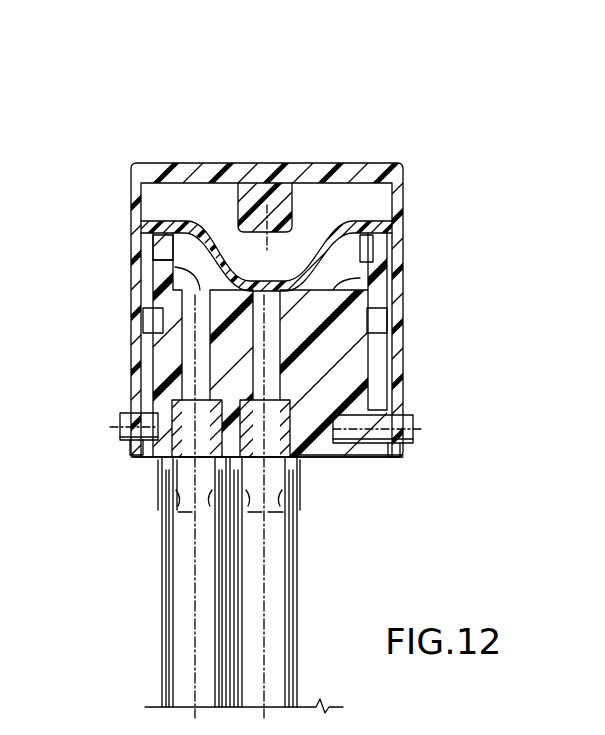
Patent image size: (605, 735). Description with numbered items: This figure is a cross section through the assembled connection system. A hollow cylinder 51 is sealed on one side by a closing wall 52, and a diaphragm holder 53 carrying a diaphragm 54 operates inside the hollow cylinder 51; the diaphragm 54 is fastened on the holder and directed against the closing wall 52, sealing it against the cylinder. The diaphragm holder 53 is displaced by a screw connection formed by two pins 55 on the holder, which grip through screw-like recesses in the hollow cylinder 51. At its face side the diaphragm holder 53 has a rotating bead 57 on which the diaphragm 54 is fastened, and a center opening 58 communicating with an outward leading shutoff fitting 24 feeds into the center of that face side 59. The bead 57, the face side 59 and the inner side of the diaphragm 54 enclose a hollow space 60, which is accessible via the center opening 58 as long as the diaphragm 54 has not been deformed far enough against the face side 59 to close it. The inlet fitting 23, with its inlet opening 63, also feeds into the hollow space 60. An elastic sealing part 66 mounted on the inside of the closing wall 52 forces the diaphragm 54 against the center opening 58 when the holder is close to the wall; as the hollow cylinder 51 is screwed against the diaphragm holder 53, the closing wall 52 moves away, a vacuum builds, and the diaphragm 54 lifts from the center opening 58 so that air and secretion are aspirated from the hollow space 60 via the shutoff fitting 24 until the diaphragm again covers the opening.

The inlet fitting 23 is at (183, 518).
The shutoff fitting 24 is at (275, 518).
The hollow cylinder 51 is at (405, 342).
The closing wall 52 is at (349, 167).
The diaphragm holder 53 is at (328, 450).
The diaphragm 54 is at (197, 227).
The pins 55 is at (120, 424).
The rotating bead 57 is at (366, 250).
The center opening 58 is at (276, 268).
The face side 59 is at (365, 276).
The hollow space 60 is at (185, 253).
The inlet opening 63 is at (165, 248).
The elastic sealing part 66 is at (248, 197).